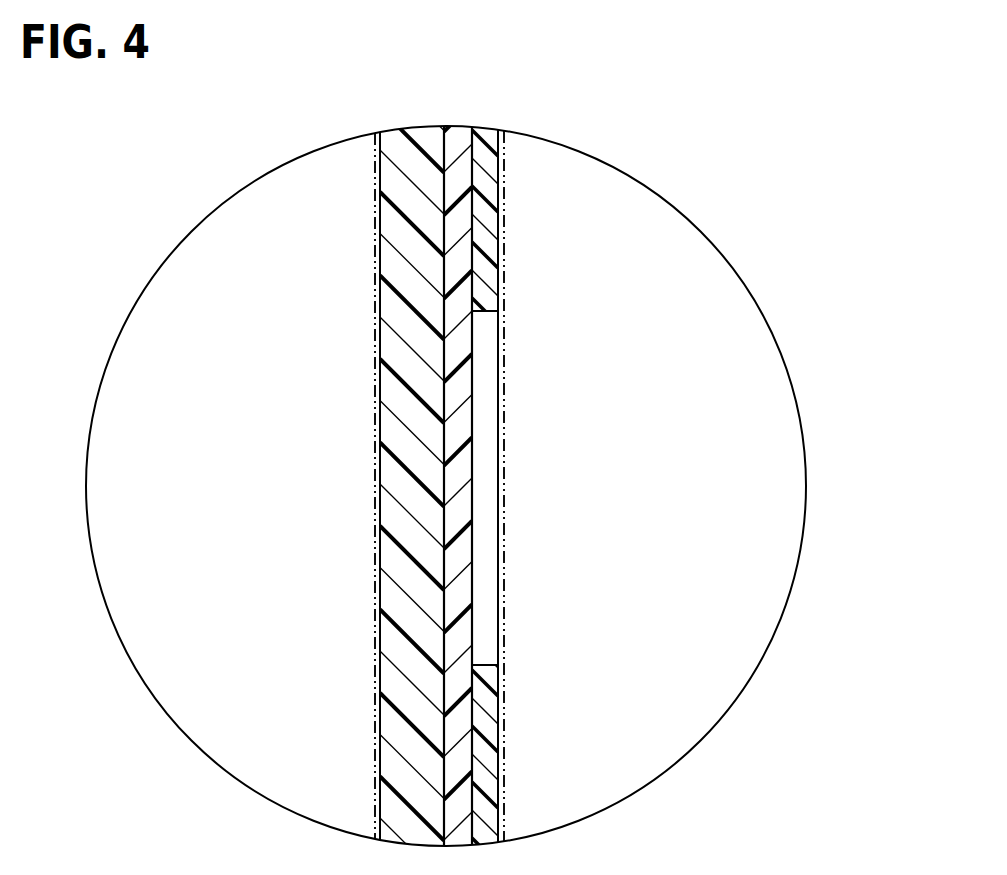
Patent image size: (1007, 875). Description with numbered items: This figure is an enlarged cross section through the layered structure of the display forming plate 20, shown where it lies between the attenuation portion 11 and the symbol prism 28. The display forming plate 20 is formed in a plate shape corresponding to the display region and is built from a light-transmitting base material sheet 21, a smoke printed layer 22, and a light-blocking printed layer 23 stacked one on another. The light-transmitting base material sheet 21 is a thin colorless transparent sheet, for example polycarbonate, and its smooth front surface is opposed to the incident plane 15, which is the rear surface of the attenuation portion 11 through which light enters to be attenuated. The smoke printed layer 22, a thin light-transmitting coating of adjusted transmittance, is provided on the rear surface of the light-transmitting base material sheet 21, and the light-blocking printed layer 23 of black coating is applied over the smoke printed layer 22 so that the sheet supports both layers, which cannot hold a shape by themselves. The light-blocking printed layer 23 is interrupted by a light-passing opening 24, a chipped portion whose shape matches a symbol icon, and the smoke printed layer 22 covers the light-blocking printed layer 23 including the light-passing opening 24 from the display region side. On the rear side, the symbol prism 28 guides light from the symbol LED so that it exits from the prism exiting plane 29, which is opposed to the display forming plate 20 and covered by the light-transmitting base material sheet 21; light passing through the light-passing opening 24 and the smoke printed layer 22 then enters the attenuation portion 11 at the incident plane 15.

The attenuation portion 11 is at (384, 200).
The incident plane 15 is at (243, 486).
The display forming plate 20 is at (512, 73).
The light-transmitting base material sheet 21 is at (389, 137).
The smoke printed layer 22 is at (459, 137).
The light-blocking printed layer 23 is at (487, 137).
The light-passing opening 24 is at (498, 315).
The symbol prism 28 is at (508, 590).
The prism exiting plane 29 is at (693, 486).